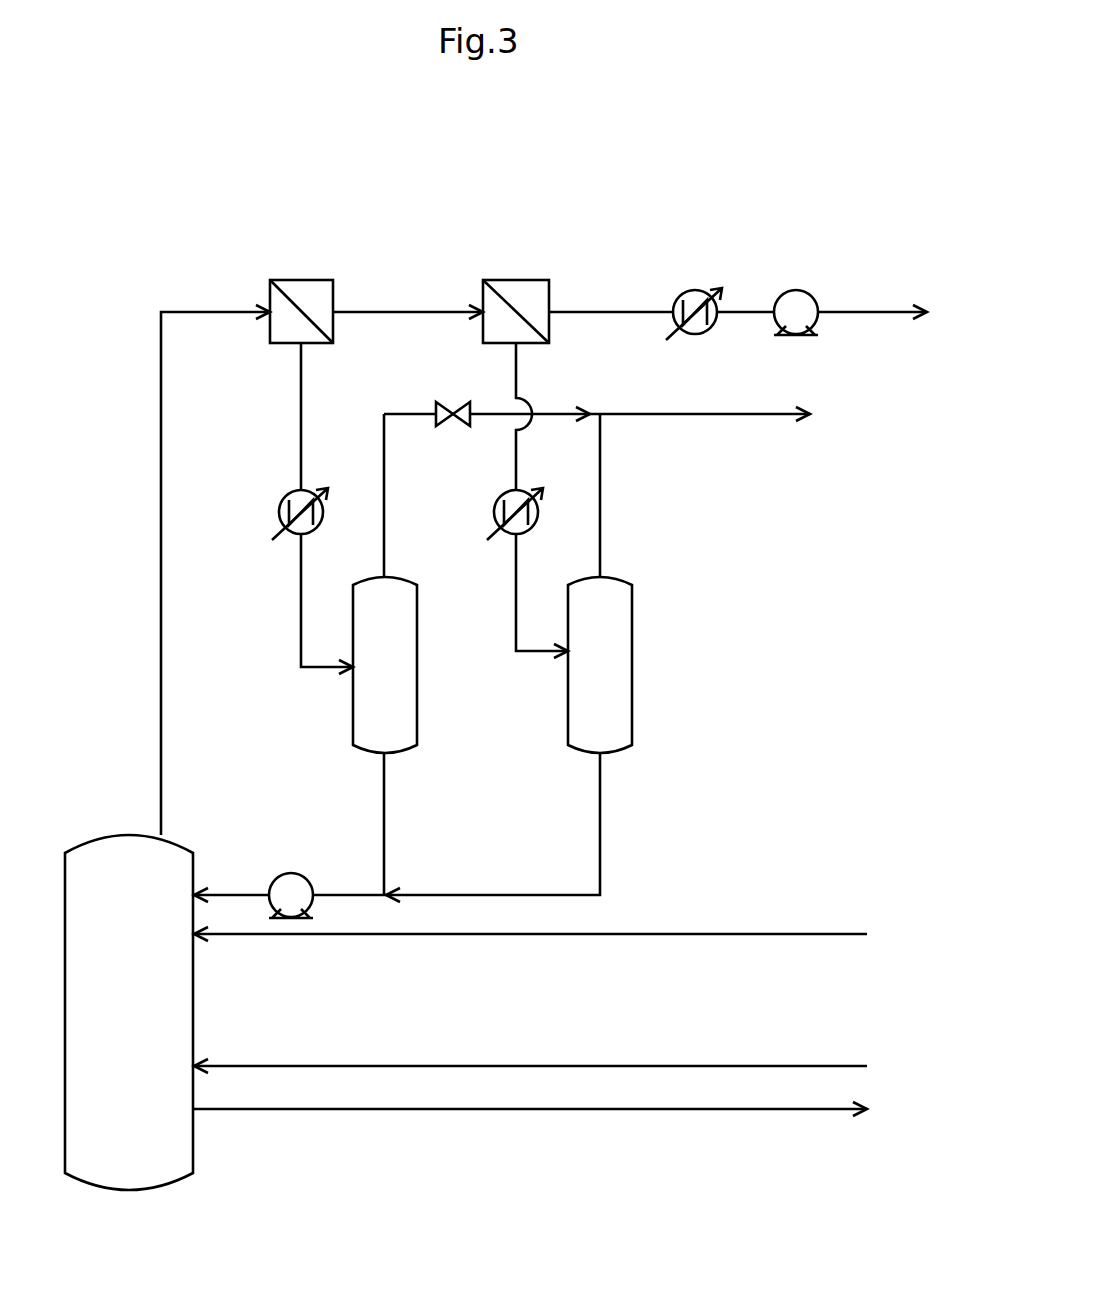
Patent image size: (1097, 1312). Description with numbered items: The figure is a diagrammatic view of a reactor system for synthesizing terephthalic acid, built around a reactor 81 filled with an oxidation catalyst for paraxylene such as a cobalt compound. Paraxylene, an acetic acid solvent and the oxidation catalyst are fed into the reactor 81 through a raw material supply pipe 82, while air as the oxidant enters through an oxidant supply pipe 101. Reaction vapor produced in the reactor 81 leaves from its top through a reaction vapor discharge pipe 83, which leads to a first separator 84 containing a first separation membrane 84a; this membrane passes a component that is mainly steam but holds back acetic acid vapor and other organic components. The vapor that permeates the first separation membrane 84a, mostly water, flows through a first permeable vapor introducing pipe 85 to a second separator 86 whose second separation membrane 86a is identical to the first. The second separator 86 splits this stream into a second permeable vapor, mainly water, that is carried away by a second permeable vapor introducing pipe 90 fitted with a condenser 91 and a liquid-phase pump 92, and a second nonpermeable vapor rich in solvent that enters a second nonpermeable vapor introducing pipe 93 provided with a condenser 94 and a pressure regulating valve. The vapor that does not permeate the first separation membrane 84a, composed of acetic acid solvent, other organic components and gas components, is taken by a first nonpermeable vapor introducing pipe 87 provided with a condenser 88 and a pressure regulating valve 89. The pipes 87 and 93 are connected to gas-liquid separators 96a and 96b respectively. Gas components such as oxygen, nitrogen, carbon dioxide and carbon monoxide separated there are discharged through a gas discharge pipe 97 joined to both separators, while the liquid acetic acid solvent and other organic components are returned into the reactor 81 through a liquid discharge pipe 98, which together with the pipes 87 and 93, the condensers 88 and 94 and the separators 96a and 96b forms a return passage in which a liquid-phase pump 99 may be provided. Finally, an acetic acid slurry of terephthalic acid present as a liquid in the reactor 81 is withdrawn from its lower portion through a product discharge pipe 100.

The reactor 81 is at (176, 843).
The raw material supply pipe 82 is at (256, 937).
The reaction vapor discharge pipe 83 is at (160, 727).
The first separator 84 is at (320, 280).
The first separation membrane 84a is at (292, 296).
The first permeable vapor introducing pipe 85 is at (392, 312).
The second separator 86 is at (537, 280).
The second separation membrane 86a is at (500, 296).
The first nonpermeable vapor introducing pipe 87 is at (300, 400).
The condenser 88 is at (284, 495).
The pressure regulating valve 89 is at (440, 405).
The second permeable vapor introducing pipe 90 is at (605, 312).
The condenser 91 is at (672, 300).
The liquid-phase pump 92 is at (803, 291).
The second nonpermeable vapor introducing pipe 93 is at (516, 382).
The condenser 94 is at (498, 505).
The gas-liquid separator 96a is at (417, 660).
The gas-liquid separator 96b is at (632, 605).
The gas discharge pipe 97 is at (663, 414).
The liquid discharge pipe 98 is at (356, 893).
The liquid-phase pump 99 is at (278, 880).
The product discharge pipe 100 is at (372, 1111).
The oxidant supply pipe 101 is at (340, 1066).